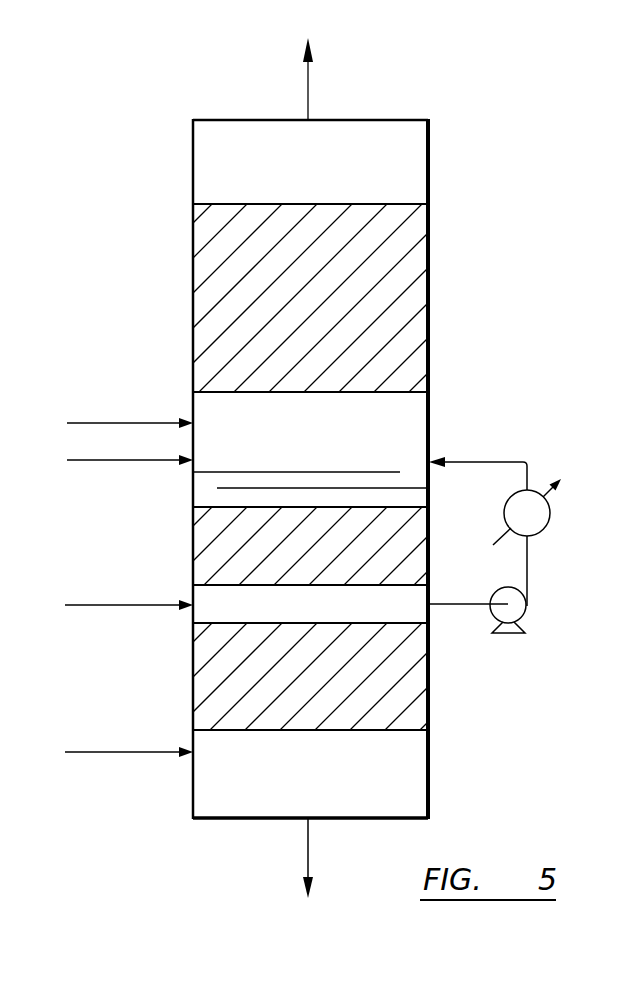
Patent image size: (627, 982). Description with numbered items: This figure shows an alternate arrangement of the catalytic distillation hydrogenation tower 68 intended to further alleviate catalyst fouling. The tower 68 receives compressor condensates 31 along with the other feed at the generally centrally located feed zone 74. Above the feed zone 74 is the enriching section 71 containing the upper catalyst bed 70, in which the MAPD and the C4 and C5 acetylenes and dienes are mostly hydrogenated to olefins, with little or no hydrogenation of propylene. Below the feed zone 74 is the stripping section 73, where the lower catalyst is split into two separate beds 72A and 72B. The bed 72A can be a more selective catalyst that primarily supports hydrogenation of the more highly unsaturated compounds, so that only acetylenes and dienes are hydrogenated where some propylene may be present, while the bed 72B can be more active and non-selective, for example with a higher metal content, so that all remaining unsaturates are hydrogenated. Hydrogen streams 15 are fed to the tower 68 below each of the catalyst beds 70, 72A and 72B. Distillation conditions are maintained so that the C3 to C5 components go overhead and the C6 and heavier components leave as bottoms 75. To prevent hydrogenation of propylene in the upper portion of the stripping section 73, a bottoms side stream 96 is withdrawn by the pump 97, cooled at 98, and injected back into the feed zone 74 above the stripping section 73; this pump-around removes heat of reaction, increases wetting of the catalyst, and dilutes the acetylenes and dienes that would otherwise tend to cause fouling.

The hydrogen stream 15 is at (120, 461).
The compressor condensates 31 is at (120, 423).
The catalytic distillation hydrogenation tower 68 is at (480, 425).
The catalyst bed 70 is at (418, 270).
The enriching section 71 is at (193, 297).
The catalyst bed 72A is at (205, 510).
The catalyst bed 72B is at (207, 683).
The stripping section 73 is at (193, 592).
The feed zone 74 is at (432, 403).
The bottoms 75 is at (308, 843).
The bottoms side stream 96 is at (466, 604).
The pump 97 is at (528, 612).
The cooler 98 is at (550, 525).